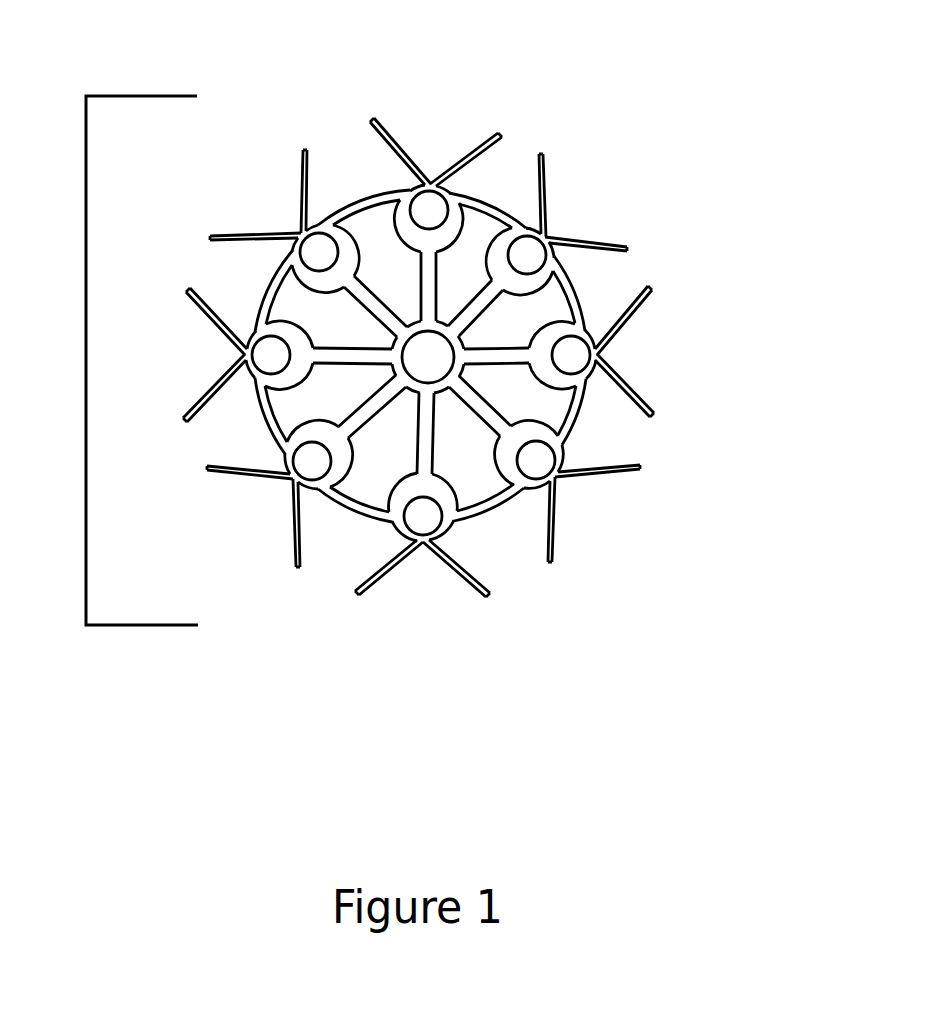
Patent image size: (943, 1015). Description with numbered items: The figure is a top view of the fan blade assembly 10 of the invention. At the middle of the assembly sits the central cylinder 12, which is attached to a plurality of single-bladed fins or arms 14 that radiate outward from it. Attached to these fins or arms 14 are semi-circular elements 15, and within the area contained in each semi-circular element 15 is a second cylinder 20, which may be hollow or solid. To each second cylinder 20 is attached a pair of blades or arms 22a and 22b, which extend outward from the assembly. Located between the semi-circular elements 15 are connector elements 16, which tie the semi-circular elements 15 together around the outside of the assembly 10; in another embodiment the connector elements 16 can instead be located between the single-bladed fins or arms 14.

The fan blade assembly 10 is at (417, 360).
The central cylinder 12 is at (427, 352).
The single-bladed fins or arms 14 is at (484, 304).
The semi-circular elements 15 is at (565, 323).
The connector elements 16 is at (583, 417).
The second cylinder 20 is at (538, 465).
The blade or arm 22a is at (380, 578).
The blade or arm 22b is at (465, 587).